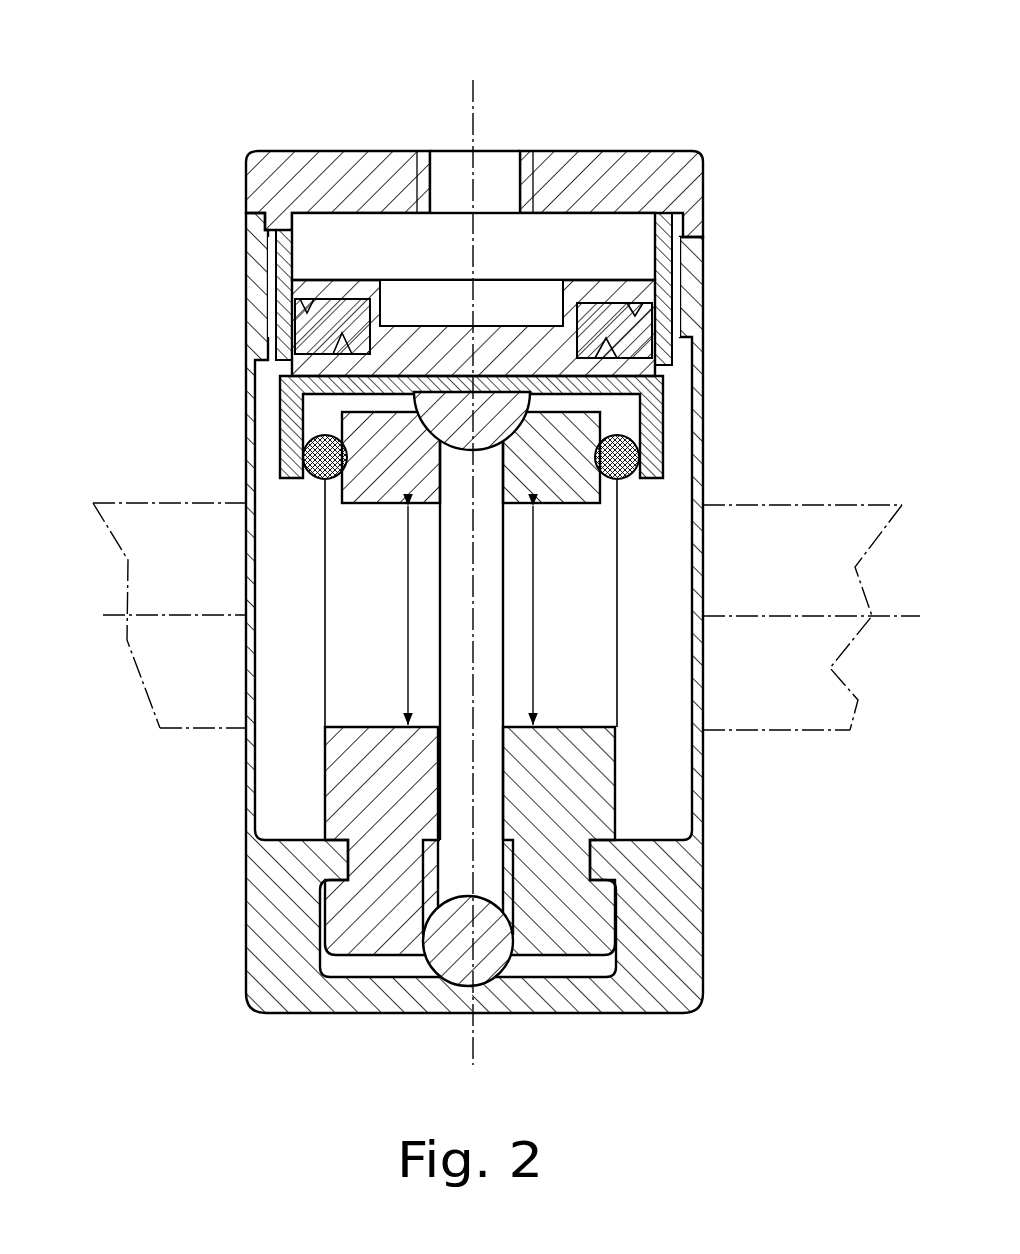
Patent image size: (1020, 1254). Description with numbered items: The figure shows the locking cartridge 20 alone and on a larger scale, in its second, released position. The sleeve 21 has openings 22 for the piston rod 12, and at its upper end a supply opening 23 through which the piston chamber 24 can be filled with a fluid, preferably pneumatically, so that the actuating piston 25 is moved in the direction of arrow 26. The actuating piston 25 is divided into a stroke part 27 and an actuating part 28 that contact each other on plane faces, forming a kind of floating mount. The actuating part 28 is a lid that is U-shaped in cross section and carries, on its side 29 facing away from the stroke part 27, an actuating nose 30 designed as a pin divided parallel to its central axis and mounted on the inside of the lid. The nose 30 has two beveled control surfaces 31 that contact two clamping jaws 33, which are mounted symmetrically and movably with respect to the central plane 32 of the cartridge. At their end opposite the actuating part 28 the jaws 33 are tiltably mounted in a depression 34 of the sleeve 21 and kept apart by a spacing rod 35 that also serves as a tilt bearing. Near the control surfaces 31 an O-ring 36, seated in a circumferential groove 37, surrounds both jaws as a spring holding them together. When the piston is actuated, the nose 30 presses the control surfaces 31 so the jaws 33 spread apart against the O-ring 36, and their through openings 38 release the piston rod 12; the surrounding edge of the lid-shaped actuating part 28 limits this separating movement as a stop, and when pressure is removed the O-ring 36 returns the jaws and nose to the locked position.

The piston rod 12 is at (190, 714).
The locking cartridge 20 is at (476, 521).
The sleeve 21 is at (575, 172).
The openings 22 is at (252, 495).
The supply opening 23 is at (486, 170).
The piston chamber 24 is at (330, 240).
The actuating piston 25 is at (611, 253).
The arrow 26 is at (500, 197).
The stroke part 27 is at (635, 368).
The actuating part 28 is at (632, 393).
The side 29 is at (359, 415).
The actuating nose 30 is at (387, 374).
The beveled control surfaces 31 is at (450, 673).
The central plane 32 is at (470, 97).
The clamping jaws 33 is at (343, 797).
The depression 34 is at (448, 876).
The spacing rod 35 is at (487, 924).
The O-ring 36 is at (325, 455).
The circumferential groove 37 is at (609, 437).
The through openings 38 is at (425, 607).